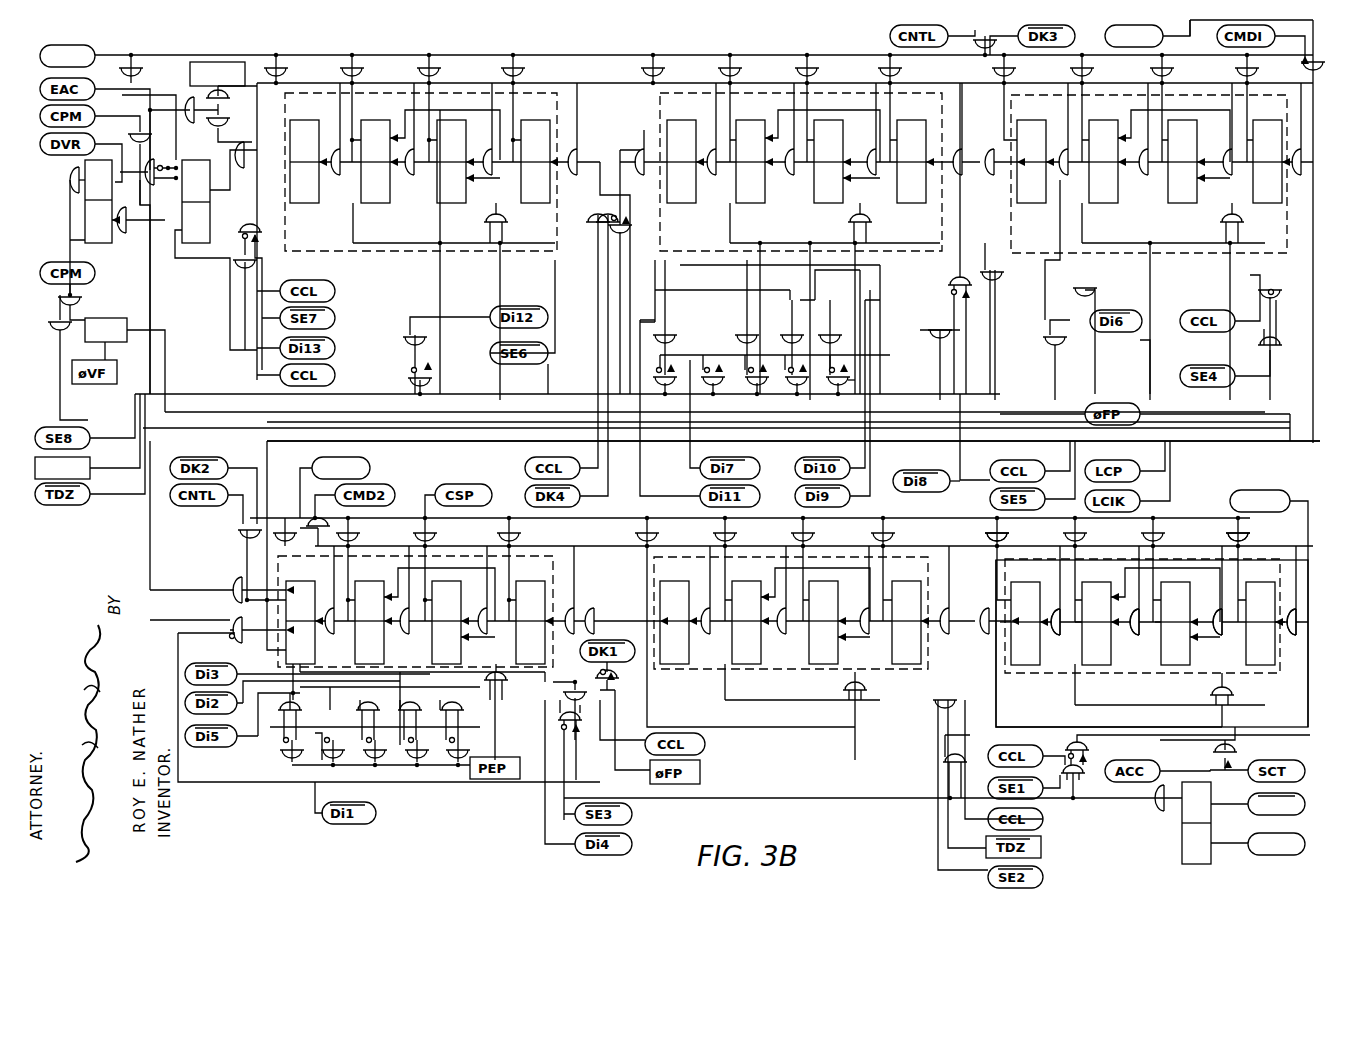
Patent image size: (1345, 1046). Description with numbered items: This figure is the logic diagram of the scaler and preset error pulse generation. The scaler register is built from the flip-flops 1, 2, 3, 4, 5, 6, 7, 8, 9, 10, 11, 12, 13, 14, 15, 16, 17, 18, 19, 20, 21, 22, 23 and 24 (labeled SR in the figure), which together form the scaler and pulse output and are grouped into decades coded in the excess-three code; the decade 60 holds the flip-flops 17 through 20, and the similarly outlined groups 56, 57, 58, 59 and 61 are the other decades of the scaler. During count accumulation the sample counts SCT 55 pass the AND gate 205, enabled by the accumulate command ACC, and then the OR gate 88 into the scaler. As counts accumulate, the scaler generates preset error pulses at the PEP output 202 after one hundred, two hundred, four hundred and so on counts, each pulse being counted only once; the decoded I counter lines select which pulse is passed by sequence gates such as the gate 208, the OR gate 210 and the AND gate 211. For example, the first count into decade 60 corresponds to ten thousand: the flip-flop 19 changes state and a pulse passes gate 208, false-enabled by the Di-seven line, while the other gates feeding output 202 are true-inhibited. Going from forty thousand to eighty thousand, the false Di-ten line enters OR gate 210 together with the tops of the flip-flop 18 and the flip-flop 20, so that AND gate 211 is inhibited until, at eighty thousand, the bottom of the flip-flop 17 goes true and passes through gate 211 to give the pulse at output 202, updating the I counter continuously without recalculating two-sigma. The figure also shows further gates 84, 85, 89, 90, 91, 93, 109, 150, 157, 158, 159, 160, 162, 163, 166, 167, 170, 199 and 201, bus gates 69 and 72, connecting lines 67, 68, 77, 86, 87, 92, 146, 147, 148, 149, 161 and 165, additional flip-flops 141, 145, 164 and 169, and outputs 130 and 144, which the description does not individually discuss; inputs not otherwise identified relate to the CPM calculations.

The flip-flop SR1 1 is at (1260, 665).
The flip-flop SR2 2 is at (1172, 665).
The flip-flop SR3 3 is at (1100, 665).
The flip-flop SR4 4 is at (1020, 665).
The flip-flop SR5 5 is at (906, 622).
The flip-flop SR6 6 is at (823, 622).
The flip-flop SR7 7 is at (746, 622).
The flip-flop SR8 8 is at (674, 622).
The flip-flop SR9 9 is at (530, 622).
The flip-flop SR10 10 is at (446, 622).
The flip-flop SR11 11 is at (369, 622).
The flip-flop SR12 12 is at (300, 622).
The flip-flop SR13 13 is at (1267, 161).
The flip-flop SR14 14 is at (1182, 161).
The flip-flop SR15 15 is at (1103, 161).
The flip-flop SR16 16 is at (1031, 161).
The flip-flop SR17 17 is at (911, 161).
The flip-flop SR18 18 is at (828, 161).
The flip-flop SR19 19 is at (750, 161).
The flip-flop SR20 20 is at (681, 161).
The flip-flop SR21 21 is at (535, 161).
The flip-flop SR22 22 is at (451, 161).
The flip-flop SR23 23 is at (375, 161).
The flip-flop SR24 24 is at (304, 161).
The sample counts SCT 55 is at (1252, 762).
The register stage group 56 is at (1005, 580).
The register stage group 57 is at (654, 580).
The register stage group 58 is at (553, 576).
The register stage group 59 is at (1178, 253).
The decade 60 is at (678, 251).
The register stage group 61 is at (340, 251).
The CSP input line 67 is at (95, 50).
The clock bus line 68 is at (305, 55).
The gate 69 is at (1235, 534).
The gate 72 is at (1070, 534).
The CMS line 77 is at (370, 468).
The gate 84 is at (1300, 62).
The gates 85 is at (300, 522).
The bus line 86 is at (1105, 83).
The bus line 87 is at (596, 518).
The OR gate 88 is at (1292, 610).
The gate 89 is at (1215, 610).
The gate 90 is at (1133, 635).
The gate 91 is at (1058, 610).
The SR25 output line 92 is at (192, 250).
The gate 93 is at (240, 170).
The gates 109 is at (1190, 332).
The CLN output 130 is at (1256, 815).
The phi VF flip-flop 141 is at (105, 243).
The DiZ output 144 is at (1270, 855).
The TDZ flip-flop 145 is at (1198, 864).
The line 146 is at (1200, 429).
The line 147 is at (1276, 338).
The line 148 is at (1275, 292).
The line 149 is at (980, 500).
The gate 150 is at (940, 330).
The gate 157 is at (45, 144).
The gate 158 is at (576, 735).
The gate 159 is at (570, 686).
The gate 160 is at (1078, 798).
The EAC line 161 is at (95, 92).
The gate 162 is at (190, 124).
The gate 163 is at (228, 105).
The PECL flip-flop 164 is at (222, 62).
The PECL input 165 is at (1262, 490).
The gate 166 is at (135, 134).
The gate 167 is at (635, 228).
The GTF flip-flop 169 is at (92, 342).
The gate 170 is at (80, 303).
The gate 199 is at (1215, 705).
The gate 201 is at (950, 282).
The PEP output 202 is at (90, 475).
The AND gate 205 is at (1195, 754).
The gate 208 is at (713, 380).
The OR gate 210 is at (835, 338).
The AND gate 211 is at (848, 380).